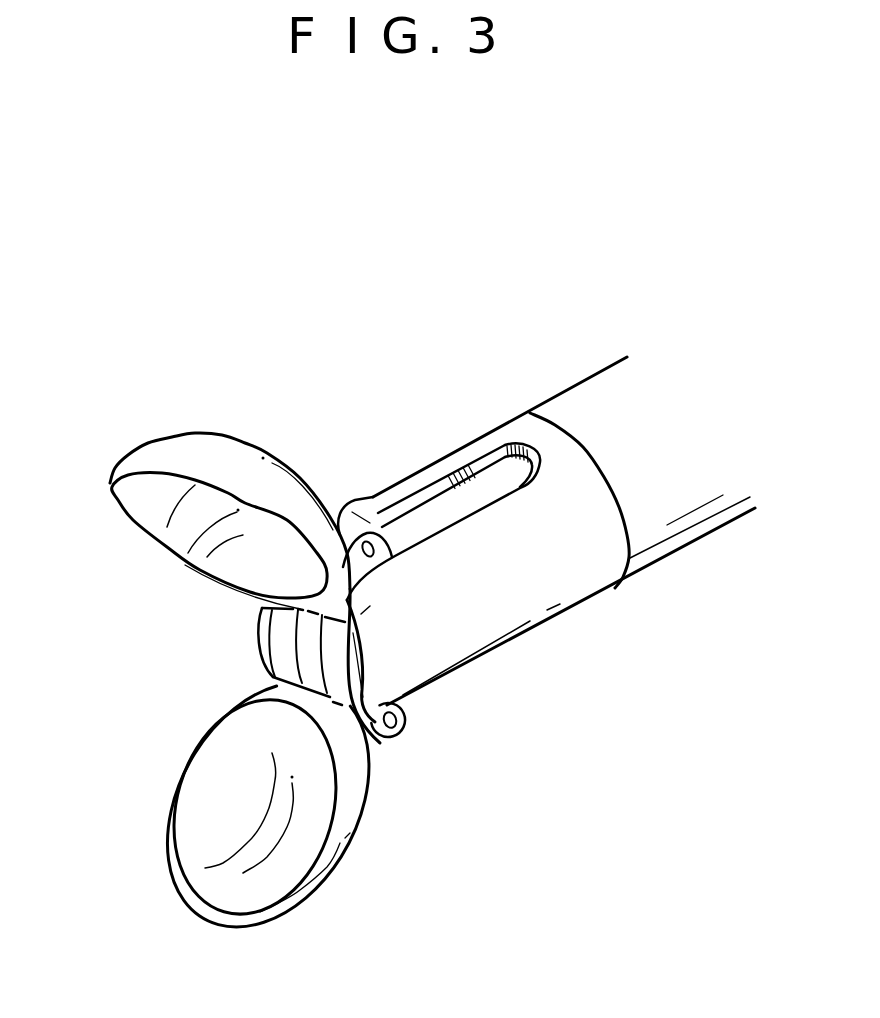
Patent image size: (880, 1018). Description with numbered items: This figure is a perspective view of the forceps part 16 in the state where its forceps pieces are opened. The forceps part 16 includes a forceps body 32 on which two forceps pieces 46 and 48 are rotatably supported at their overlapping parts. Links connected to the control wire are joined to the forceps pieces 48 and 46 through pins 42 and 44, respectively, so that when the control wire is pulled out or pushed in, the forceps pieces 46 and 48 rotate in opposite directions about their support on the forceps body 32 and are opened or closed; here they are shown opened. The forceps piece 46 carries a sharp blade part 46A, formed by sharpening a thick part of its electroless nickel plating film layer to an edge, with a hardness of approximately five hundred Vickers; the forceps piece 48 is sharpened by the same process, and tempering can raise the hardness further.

The forceps part 16 is at (294, 609).
The forceps body 32 is at (580, 552).
The pin 42 is at (372, 540).
The pin 44 is at (407, 705).
The forceps piece 46 is at (202, 503).
The blade part 46A is at (193, 487).
The forceps piece 48 is at (350, 822).